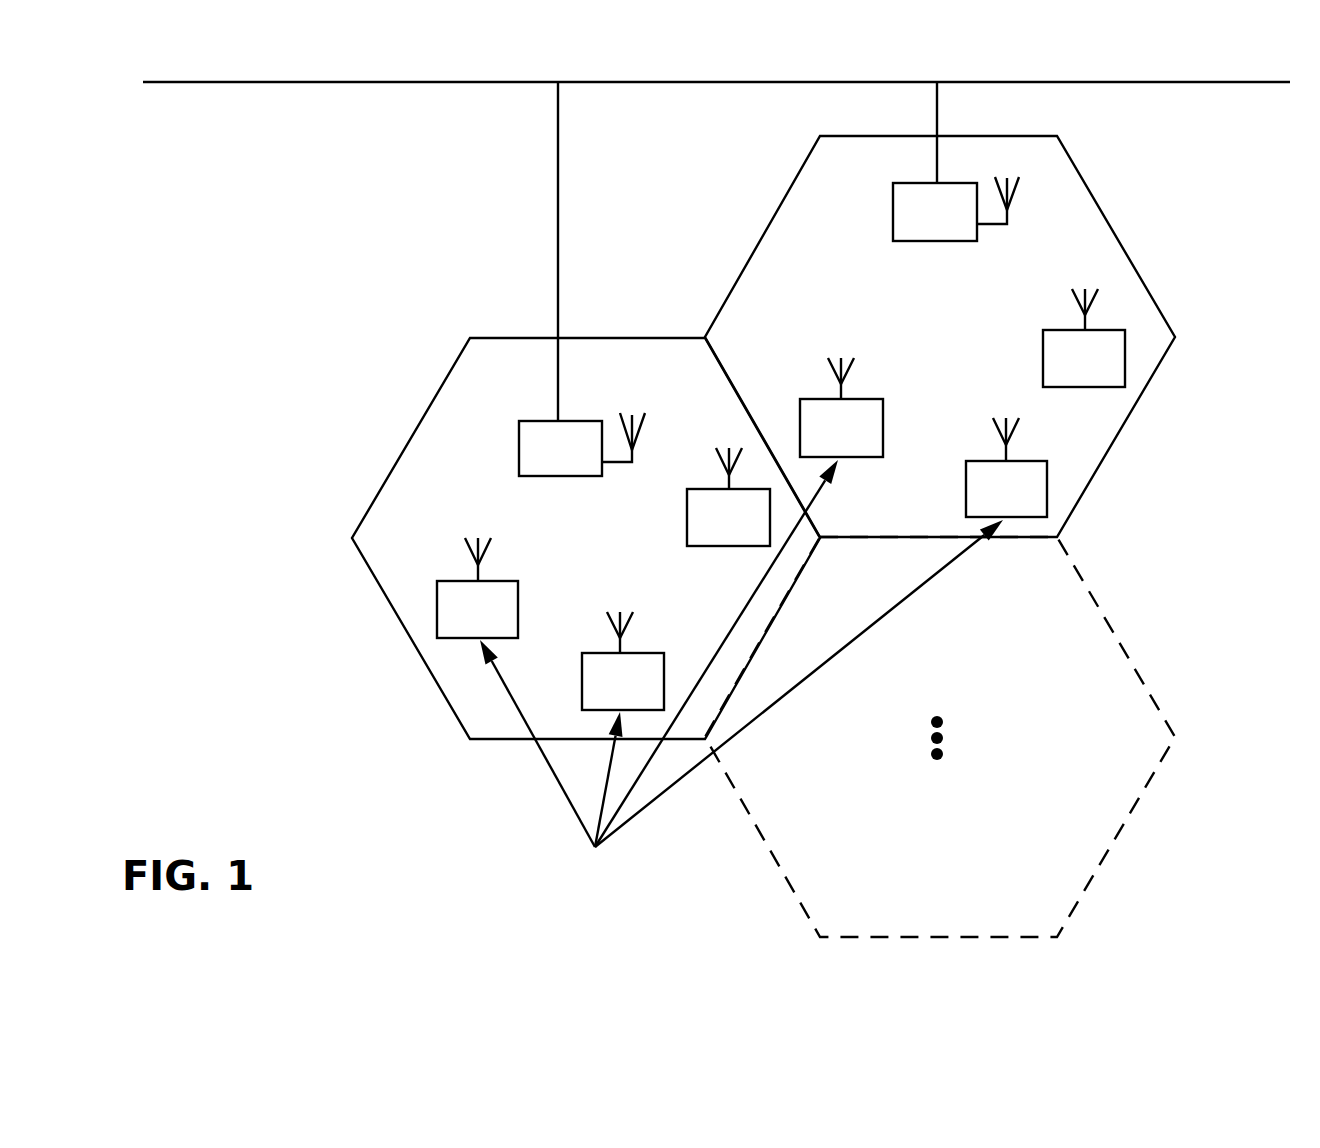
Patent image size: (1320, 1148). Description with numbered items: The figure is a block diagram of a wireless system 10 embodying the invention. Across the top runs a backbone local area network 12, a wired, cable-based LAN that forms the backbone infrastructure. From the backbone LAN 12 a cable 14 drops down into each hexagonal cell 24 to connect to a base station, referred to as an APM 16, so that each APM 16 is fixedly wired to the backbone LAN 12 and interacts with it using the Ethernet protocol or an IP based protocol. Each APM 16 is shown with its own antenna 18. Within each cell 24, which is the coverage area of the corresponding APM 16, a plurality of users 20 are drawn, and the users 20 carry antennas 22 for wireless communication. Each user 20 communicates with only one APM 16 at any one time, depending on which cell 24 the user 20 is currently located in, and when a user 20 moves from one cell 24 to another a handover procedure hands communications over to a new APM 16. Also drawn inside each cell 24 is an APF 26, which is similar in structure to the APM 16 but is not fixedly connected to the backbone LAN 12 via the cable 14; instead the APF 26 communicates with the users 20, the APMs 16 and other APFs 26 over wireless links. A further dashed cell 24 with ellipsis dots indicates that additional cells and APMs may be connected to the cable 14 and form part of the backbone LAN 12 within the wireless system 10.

The wireless system 10 is at (216, 264).
The backbone local area network 12 is at (715, 68).
The cable 14 is at (558, 222).
The APM 16 is at (519, 446).
The antenna 18 is at (645, 418).
The user 20 is at (741, 675).
The antenna 22 is at (466, 549).
The cell 24 is at (352, 540).
The APF 26 is at (687, 513).